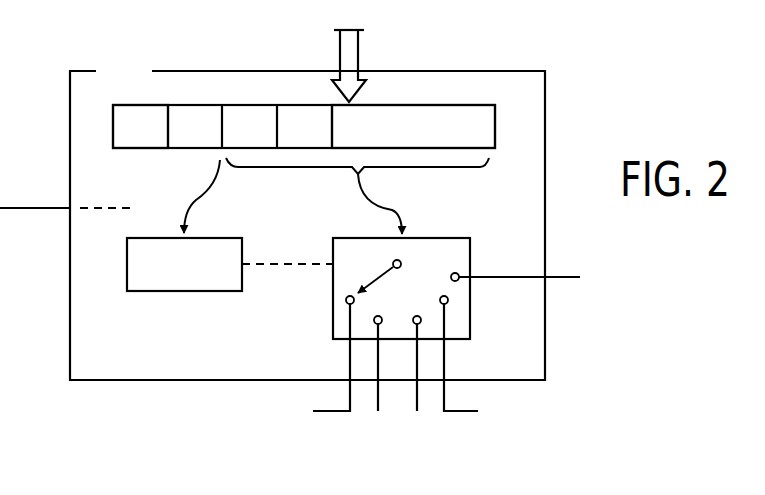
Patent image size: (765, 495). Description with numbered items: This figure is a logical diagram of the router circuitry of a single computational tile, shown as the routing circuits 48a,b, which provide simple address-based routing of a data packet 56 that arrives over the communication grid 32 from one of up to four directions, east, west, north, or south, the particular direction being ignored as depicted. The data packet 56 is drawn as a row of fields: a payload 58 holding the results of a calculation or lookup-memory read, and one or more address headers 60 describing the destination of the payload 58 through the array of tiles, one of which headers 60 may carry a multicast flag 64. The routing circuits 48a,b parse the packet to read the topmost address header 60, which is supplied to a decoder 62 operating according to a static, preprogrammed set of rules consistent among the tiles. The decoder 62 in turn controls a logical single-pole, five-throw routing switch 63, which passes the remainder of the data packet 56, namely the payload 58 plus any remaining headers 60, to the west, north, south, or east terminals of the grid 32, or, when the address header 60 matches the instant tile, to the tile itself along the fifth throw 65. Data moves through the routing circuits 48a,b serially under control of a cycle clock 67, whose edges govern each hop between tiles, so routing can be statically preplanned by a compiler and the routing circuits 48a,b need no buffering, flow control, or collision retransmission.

The routing circuits 48a,b is at (575, 83).
The data packet 56 is at (474, 100).
The payload 58 is at (428, 138).
The address headers 60 is at (295, 104).
The multicast flag 64 is at (143, 104).
The decoder 62 is at (199, 278).
The routing switch 63 is at (443, 238).
The fifth throw 65 is at (560, 277).
The cycle clock 67 is at (25, 212).
The communication grid 32 is at (361, 60).